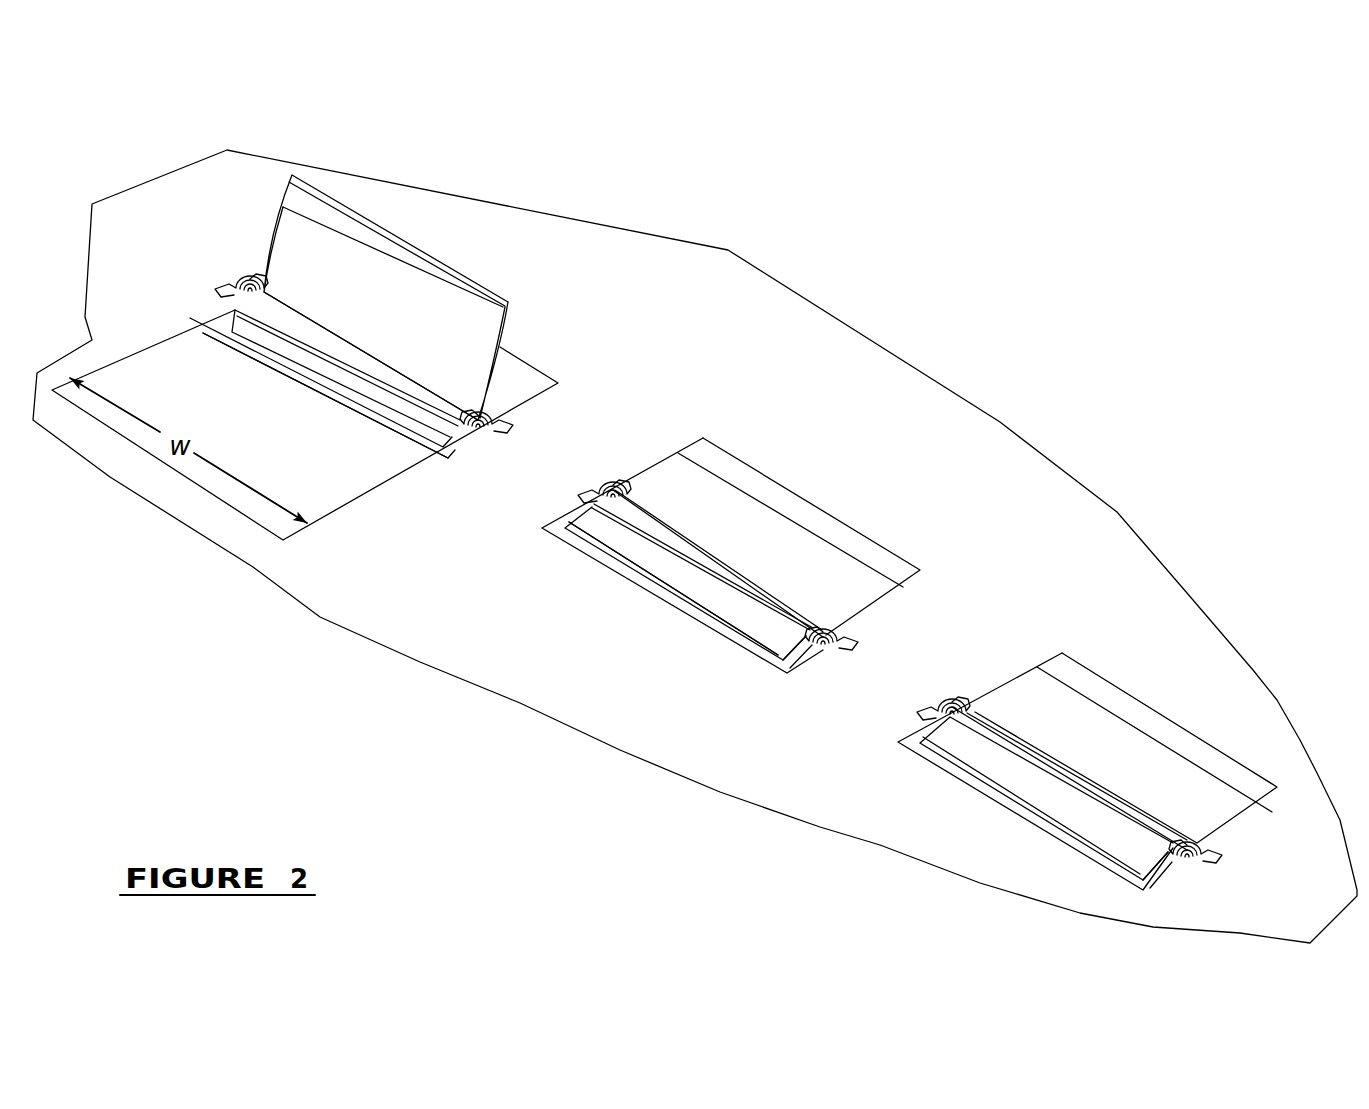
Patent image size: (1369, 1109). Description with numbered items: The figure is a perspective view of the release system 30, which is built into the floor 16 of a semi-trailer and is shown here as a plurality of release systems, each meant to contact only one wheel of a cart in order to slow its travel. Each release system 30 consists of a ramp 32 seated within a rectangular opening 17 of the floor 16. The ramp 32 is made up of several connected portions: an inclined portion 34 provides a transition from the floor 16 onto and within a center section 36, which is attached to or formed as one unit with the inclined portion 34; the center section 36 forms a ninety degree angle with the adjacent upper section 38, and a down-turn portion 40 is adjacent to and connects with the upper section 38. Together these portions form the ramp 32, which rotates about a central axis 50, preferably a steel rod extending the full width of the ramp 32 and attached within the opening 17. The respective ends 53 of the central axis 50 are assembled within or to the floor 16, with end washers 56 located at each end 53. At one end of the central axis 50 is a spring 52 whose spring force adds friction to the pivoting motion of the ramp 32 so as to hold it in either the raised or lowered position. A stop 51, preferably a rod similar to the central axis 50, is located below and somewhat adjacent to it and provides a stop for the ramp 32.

The floor 16 is at (724, 268).
The opening 17 is at (655, 470).
The release system 30 is at (665, 528).
The ramp 32 is at (490, 505).
The inclined portion 34 is at (477, 307).
The center section 36 is at (423, 348).
The upper section 38 is at (308, 345).
The down-turn portion 40 is at (253, 338).
The central axis 50 is at (450, 410).
The stop 51 is at (795, 652).
The spring 52 is at (497, 413).
The ends 53 is at (262, 297).
The end washers 56 is at (262, 278).